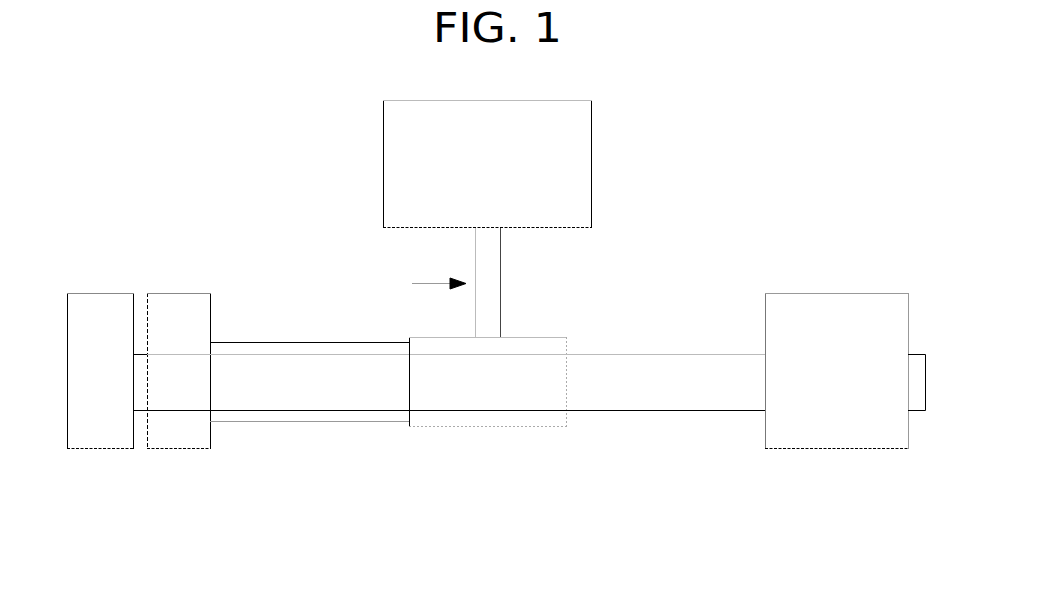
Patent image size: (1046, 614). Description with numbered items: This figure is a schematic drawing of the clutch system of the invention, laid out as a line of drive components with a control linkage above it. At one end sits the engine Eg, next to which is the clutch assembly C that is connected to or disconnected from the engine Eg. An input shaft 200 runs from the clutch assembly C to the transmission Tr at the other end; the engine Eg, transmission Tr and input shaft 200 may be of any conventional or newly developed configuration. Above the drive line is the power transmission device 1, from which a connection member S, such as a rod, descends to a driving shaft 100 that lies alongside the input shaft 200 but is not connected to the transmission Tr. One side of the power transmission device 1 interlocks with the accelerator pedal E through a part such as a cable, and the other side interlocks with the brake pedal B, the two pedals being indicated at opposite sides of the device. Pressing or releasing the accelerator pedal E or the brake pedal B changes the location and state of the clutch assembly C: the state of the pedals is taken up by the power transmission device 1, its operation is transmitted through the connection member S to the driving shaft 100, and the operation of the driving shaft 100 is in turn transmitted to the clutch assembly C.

The power transmission device 1 is at (502, 178).
The driving shaft 100 is at (287, 440).
The input shaft 200 is at (677, 380).
The connection member S is at (475, 253).
The brake pedal B is at (245, 120).
The accelerator pedal E is at (759, 155).
The engine Eg is at (100, 371).
The clutch assembly C is at (179, 371).
The transmission Tr is at (845, 371).